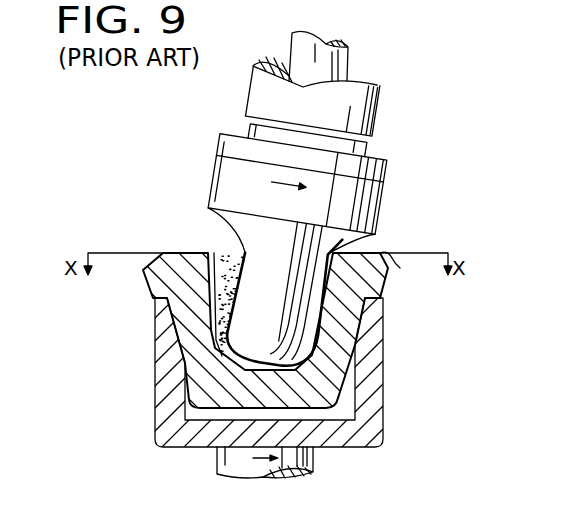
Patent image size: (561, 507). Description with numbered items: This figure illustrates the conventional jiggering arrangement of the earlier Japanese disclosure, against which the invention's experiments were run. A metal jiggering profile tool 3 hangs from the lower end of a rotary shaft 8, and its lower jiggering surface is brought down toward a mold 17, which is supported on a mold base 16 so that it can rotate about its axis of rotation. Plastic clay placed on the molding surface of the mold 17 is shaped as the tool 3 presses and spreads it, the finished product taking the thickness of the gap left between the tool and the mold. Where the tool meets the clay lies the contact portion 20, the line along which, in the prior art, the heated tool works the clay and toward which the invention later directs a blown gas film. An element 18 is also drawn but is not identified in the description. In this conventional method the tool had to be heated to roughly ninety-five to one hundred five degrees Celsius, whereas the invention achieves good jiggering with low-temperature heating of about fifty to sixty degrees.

The rotary shaft 8 is at (350, 63).
The jiggering profile tool 3 is at (242, 294).
The mold base 16 is at (372, 397).
The mold 17 is at (393, 262).
The lubricant layer 18 is at (211, 255).
The contact portion 20 is at (322, 321).